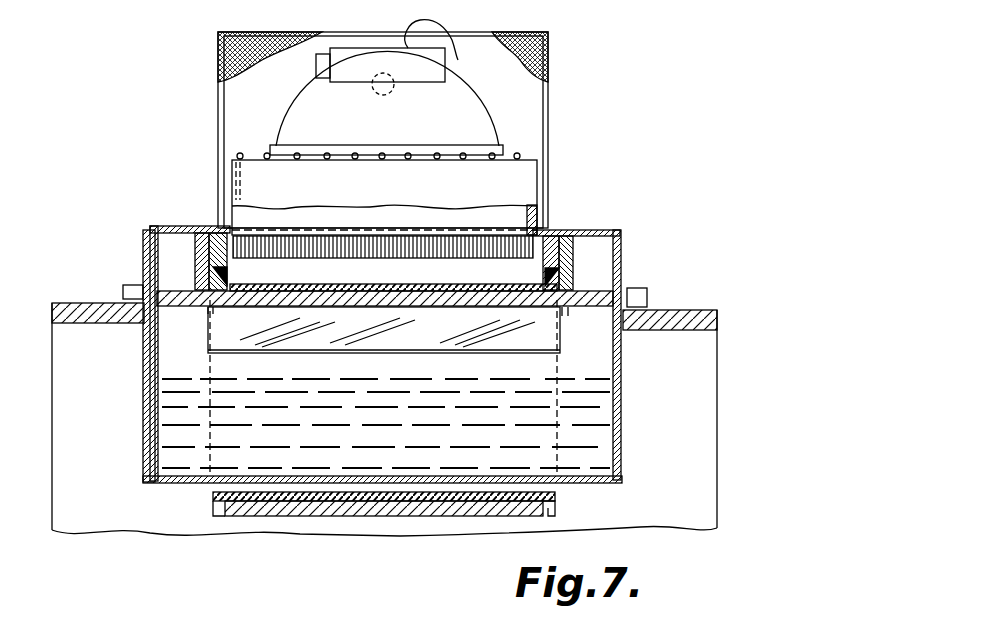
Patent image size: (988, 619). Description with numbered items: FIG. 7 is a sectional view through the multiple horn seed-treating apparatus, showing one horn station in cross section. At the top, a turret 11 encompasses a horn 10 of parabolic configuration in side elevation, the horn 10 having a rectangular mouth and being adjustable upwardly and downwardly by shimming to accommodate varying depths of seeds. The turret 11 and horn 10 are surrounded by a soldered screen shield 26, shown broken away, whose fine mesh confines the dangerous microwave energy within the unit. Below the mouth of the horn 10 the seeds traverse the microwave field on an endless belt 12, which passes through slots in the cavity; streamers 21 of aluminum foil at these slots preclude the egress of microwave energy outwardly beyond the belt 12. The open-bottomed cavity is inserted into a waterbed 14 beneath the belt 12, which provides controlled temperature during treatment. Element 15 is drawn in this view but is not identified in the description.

The housing frame 26 is at (553, 42).
The lamp socket block 15 is at (399, 51).
The lamp dome 10 is at (468, 110).
The lamp body 11 is at (520, 170).
The mounting housing 21 is at (553, 216).
The gasket / heater band 12 is at (366, 280).
The liquid tank 14 is at (590, 400).